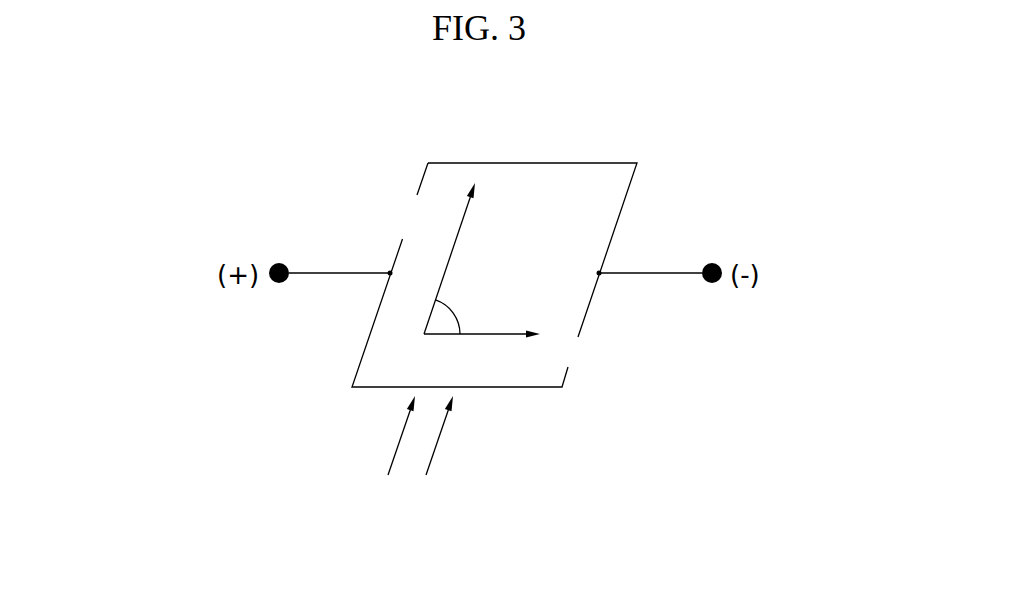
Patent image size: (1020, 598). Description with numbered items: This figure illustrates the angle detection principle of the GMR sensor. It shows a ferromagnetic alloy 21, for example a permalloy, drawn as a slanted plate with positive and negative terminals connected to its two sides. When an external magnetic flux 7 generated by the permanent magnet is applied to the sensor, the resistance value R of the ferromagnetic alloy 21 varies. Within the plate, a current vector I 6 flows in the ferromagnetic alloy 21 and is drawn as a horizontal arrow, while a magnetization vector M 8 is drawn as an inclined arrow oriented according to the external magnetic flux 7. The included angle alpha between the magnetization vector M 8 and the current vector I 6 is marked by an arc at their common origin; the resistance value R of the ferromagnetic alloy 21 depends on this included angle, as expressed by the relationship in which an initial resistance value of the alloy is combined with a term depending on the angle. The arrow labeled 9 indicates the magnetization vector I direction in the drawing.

The ferromagnetic alloy 21 is at (575, 175).
The magnetization vector M 8 is at (467, 203).
The magnetization vector I 9 is at (478, 303).
The external magnetic flux 7 is at (400, 433).
The current vector I 6 is at (470, 337).